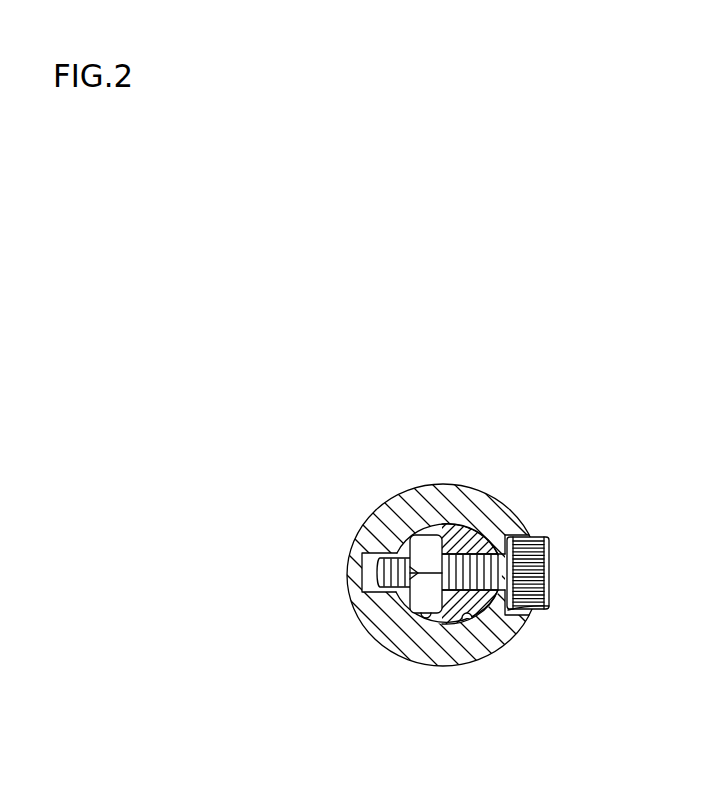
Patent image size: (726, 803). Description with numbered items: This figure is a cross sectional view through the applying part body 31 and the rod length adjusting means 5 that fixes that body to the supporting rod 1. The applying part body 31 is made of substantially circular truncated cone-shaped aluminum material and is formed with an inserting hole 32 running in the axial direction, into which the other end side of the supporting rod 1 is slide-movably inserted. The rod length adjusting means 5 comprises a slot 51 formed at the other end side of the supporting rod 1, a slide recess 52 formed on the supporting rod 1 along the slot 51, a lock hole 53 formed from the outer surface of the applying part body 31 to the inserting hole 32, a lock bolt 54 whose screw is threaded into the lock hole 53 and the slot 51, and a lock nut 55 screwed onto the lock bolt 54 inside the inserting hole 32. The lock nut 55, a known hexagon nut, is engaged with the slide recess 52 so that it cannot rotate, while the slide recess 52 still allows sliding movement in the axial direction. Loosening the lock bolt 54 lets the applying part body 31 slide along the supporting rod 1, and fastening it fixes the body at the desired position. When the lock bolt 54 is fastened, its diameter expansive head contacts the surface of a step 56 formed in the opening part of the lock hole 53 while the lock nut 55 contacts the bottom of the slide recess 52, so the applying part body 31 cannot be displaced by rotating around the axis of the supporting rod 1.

The supporting rod 1 is at (446, 523).
The rod length adjusting means 5 is at (585, 486).
The applying part body 31 is at (362, 620).
The inserting hole 32 is at (447, 625).
The slot 51 is at (489, 614).
The slide recess 52 is at (425, 616).
The lock hole 53 is at (497, 507).
The lock bolt 54 is at (552, 556).
The lock nut 55 is at (425, 540).
The step 56 is at (538, 615).